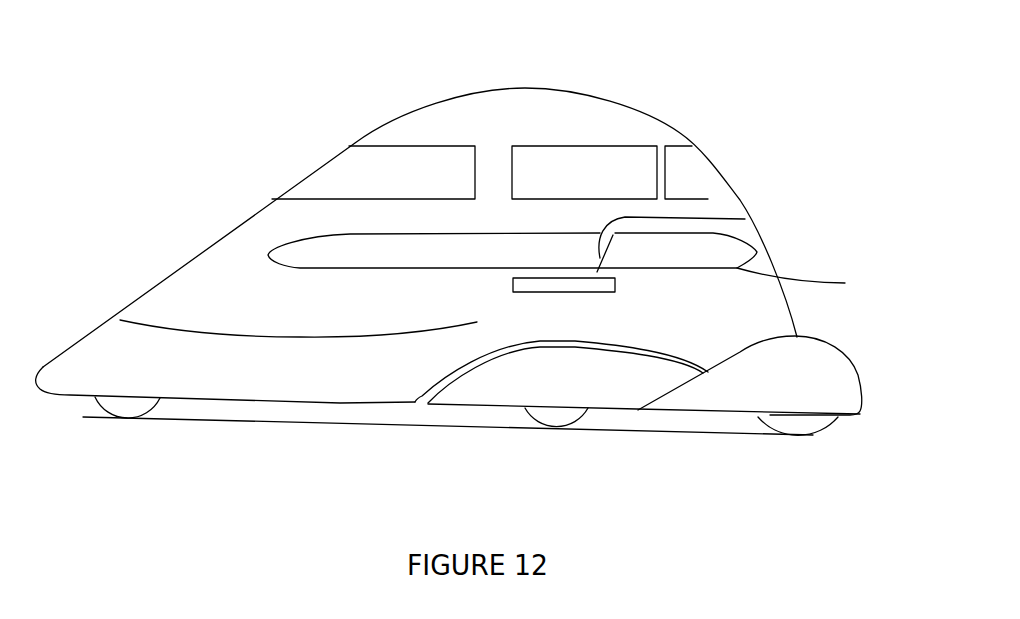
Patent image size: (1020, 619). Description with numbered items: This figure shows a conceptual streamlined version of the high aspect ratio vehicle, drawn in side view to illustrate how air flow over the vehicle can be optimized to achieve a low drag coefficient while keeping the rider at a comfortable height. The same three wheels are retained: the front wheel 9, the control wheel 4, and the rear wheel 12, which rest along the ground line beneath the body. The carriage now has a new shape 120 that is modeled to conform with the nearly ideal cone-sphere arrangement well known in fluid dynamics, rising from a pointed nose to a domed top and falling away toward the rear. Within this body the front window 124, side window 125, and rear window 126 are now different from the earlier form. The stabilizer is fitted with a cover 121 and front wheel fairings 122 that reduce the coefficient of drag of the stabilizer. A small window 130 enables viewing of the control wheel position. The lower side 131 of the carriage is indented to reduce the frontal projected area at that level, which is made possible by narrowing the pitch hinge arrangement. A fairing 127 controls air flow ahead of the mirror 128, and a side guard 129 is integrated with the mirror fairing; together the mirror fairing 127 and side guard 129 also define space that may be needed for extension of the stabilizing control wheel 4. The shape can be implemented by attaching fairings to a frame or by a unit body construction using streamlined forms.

The carriage shape 120 is at (623, 98).
The stabilizer cover 121 is at (472, 407).
The front wheel fairing 122 is at (862, 373).
The front window 124 is at (702, 175).
The side window 125 is at (580, 175).
The rear window 126 is at (380, 172).
The mirror fairing 127 is at (858, 267).
The mirror 128 is at (745, 219).
The side guard 129 is at (293, 268).
The small window 130 is at (513, 285).
The lower side of the carriage 131 is at (120, 320).
The rear wheel 12 is at (157, 400).
The control wheel 4 is at (580, 418).
The front wheel 9 is at (832, 428).